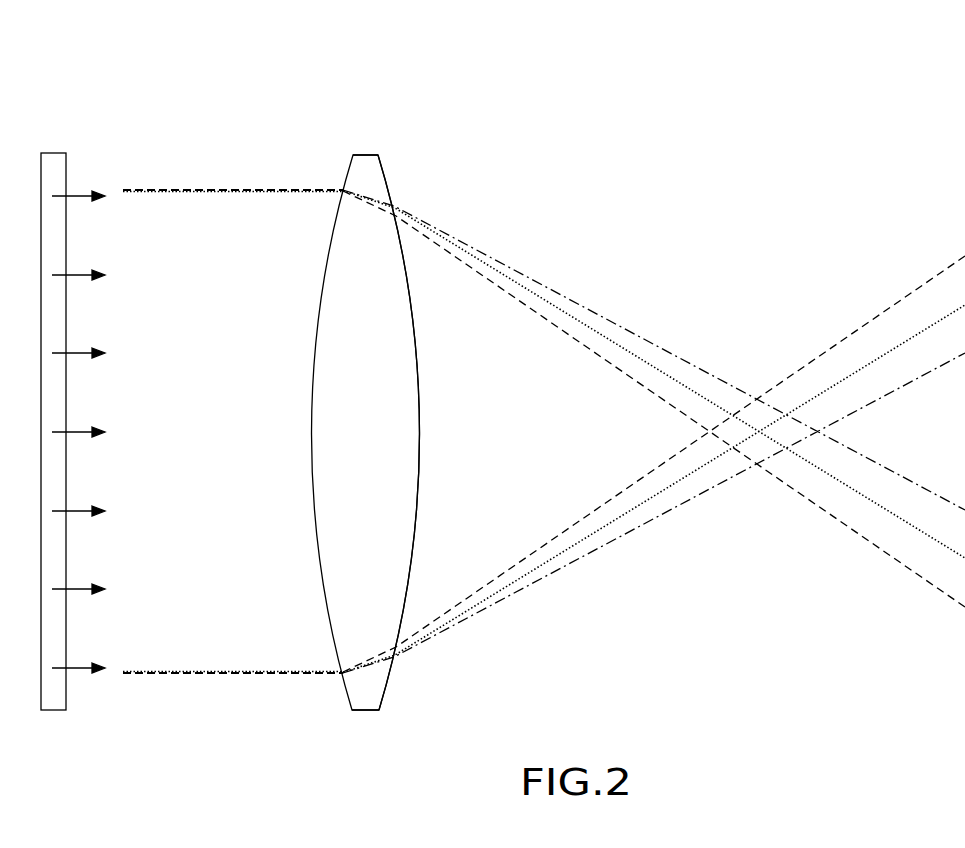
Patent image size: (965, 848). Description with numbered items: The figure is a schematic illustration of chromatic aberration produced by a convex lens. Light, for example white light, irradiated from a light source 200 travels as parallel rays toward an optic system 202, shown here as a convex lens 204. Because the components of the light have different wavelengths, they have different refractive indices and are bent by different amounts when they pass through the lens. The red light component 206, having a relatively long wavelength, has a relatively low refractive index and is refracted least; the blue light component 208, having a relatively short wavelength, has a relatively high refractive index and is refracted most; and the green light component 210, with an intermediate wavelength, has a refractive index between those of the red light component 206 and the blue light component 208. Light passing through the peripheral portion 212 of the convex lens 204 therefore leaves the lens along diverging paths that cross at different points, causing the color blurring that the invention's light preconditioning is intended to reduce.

The light source 200 is at (53, 152).
The optic system 202 is at (378, 153).
The convex lens 204 is at (382, 177).
The red light component 206 is at (607, 320).
The blue light component 208 is at (573, 337).
The green light component 210 is at (653, 367).
The peripheral portion 212 is at (358, 153).